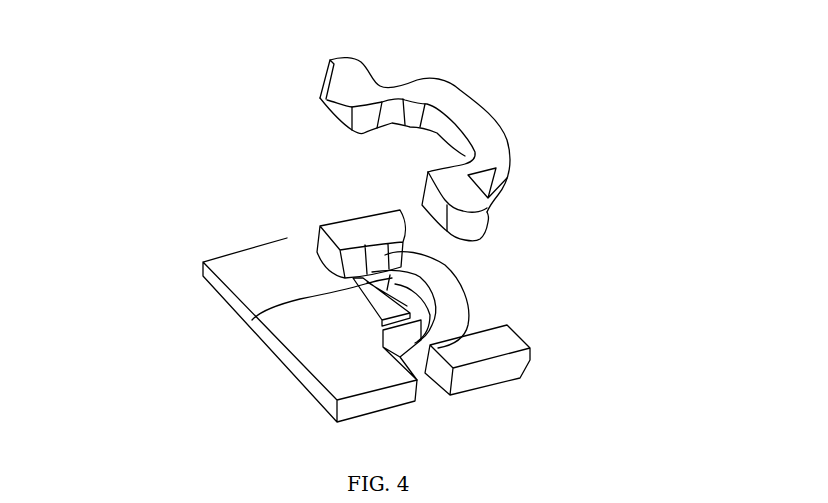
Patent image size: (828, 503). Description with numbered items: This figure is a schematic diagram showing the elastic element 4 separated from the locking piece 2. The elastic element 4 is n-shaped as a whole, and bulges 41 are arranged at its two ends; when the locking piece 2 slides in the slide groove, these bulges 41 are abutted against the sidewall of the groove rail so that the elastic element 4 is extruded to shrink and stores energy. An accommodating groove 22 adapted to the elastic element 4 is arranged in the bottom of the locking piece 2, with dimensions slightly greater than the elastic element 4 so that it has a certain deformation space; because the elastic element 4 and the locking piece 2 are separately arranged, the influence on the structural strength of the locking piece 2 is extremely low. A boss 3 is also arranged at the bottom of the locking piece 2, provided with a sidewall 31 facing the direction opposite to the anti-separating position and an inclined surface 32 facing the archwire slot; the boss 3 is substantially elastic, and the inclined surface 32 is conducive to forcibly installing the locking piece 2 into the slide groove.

The locking piece 2 is at (212, 256).
The accommodating groove 22 is at (453, 322).
The boss 3 is at (268, 311).
The sidewall of boss 31 is at (397, 280).
The inclined surface 32 is at (530, 348).
The elastic element 4 is at (420, 131).
The bulge 41 is at (331, 60).